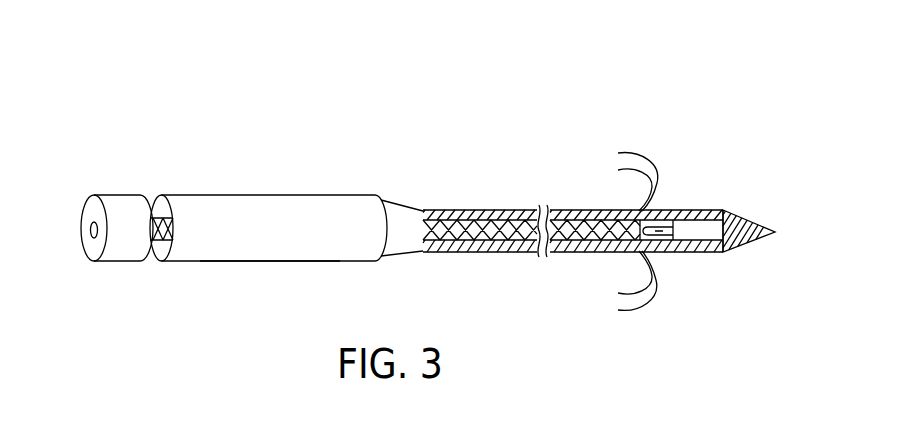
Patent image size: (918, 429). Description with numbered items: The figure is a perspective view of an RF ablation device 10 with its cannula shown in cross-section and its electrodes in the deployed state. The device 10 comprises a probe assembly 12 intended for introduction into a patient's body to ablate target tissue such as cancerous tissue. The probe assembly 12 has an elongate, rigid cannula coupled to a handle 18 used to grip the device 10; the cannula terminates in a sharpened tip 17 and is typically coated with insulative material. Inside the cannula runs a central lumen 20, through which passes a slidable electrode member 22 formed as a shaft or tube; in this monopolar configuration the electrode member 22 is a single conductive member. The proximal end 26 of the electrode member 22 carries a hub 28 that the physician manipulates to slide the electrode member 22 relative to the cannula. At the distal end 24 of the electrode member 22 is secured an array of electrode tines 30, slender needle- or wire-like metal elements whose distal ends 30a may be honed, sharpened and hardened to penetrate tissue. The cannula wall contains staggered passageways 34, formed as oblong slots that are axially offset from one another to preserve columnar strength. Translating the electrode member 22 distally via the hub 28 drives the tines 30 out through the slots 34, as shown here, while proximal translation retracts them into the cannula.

The RF ablation device 10 is at (250, 127).
The probe assembly 12 is at (227, 268).
The sharpened tip 17 is at (763, 227).
The handle 18 is at (327, 197).
The central lumen 20 is at (508, 212).
The slidable electrode member 22 is at (490, 238).
The distal end 24 is at (637, 217).
The proximal end 26 is at (158, 218).
The hub 28 is at (110, 201).
The electrode tines 30 is at (638, 311).
The distal ends 30a is at (627, 153).
The staggered passageways 34 is at (678, 220).